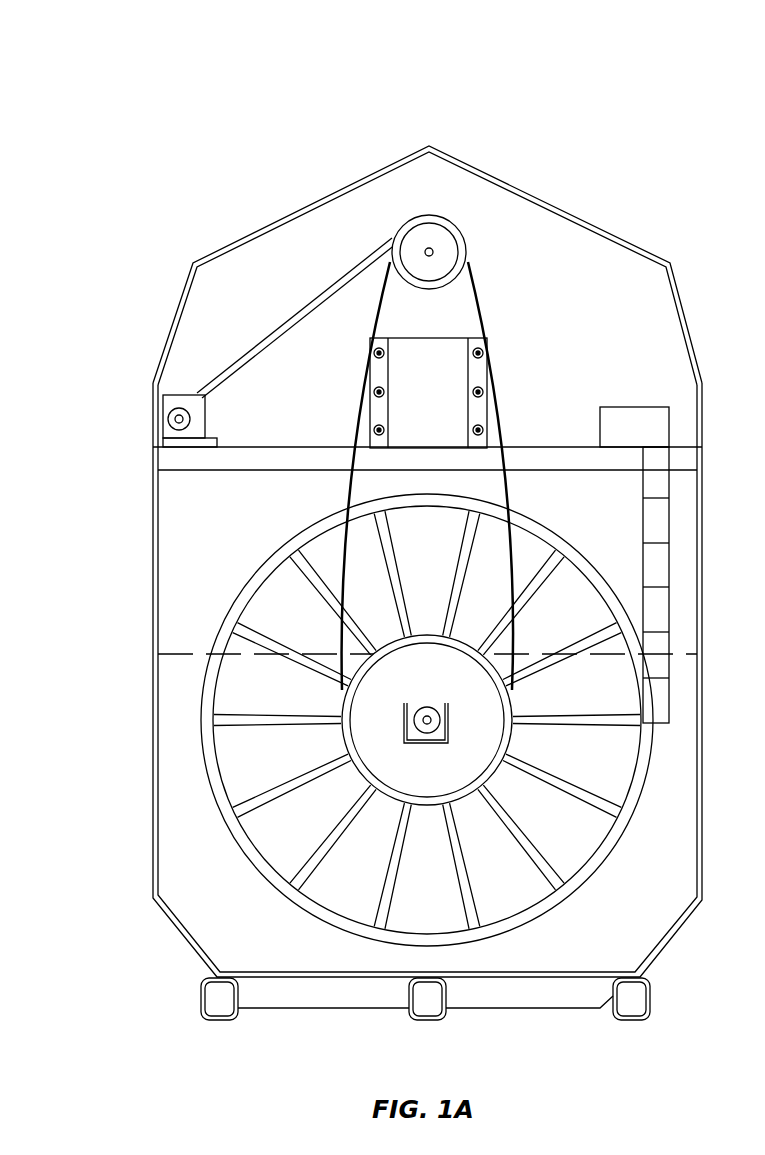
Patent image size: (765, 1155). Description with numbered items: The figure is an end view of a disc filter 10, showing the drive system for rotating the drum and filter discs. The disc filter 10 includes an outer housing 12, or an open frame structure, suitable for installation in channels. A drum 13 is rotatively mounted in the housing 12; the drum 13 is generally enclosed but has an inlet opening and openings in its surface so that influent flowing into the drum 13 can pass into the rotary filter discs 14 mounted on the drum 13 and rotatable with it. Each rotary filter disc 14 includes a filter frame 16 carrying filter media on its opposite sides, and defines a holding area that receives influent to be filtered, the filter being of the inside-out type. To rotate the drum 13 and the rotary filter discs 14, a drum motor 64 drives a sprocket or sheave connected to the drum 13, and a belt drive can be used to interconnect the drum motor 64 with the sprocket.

The disc filter 10 is at (549, 106).
The outer housing 12 is at (310, 207).
The drum 13 is at (338, 745).
The rotary filter disc 14 is at (197, 832).
The filter frame 16 is at (258, 863).
The drum motor 64 is at (447, 248).